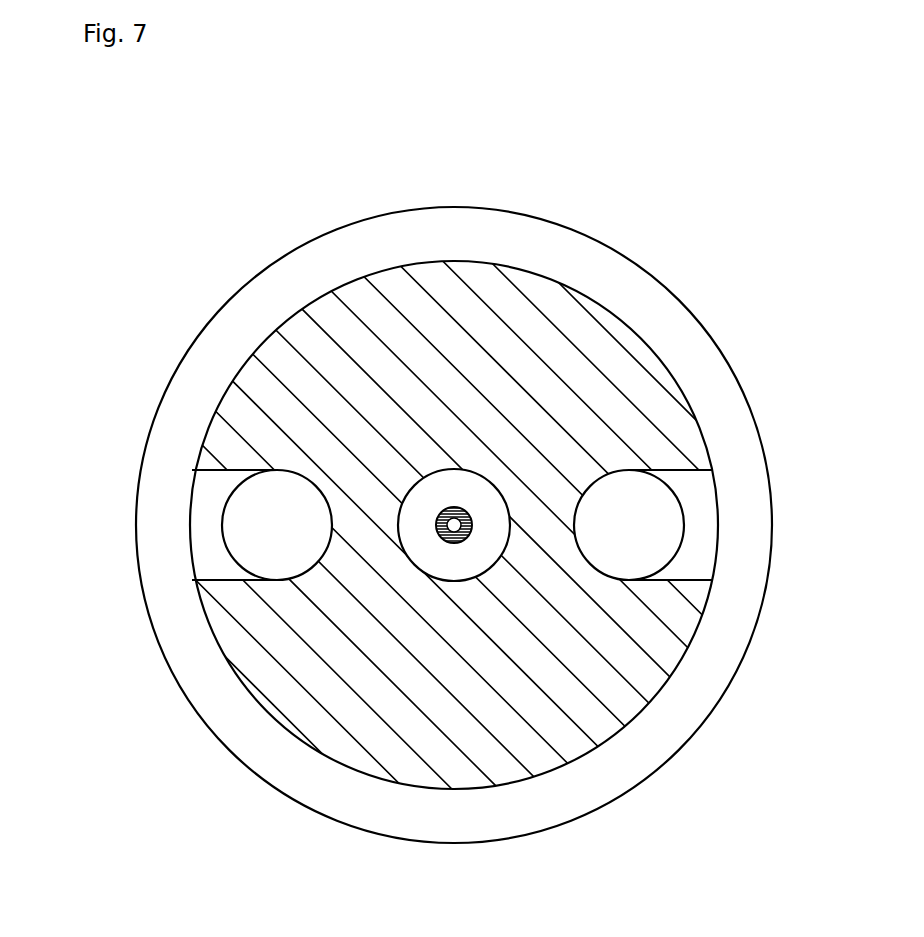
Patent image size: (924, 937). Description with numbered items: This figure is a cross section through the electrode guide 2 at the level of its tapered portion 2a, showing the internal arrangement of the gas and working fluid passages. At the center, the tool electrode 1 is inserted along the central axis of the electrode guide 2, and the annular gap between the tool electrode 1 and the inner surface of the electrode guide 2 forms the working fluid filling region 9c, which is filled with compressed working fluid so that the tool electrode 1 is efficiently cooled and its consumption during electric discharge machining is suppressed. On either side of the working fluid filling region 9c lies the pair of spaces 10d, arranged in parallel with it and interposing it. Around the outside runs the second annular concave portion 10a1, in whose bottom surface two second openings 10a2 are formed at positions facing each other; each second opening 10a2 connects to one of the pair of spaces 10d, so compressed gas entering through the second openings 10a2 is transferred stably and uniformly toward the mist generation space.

The electrode guide 2 is at (497, 502).
The tapered portion 2a is at (632, 257).
The second annular concave portion 10a1 is at (710, 667).
The second openings 10a2 is at (185, 527).
The pair of spaces 10d is at (294, 536).
The working fluid filling region 9c is at (463, 571).
The tool electrode 1 is at (470, 511).